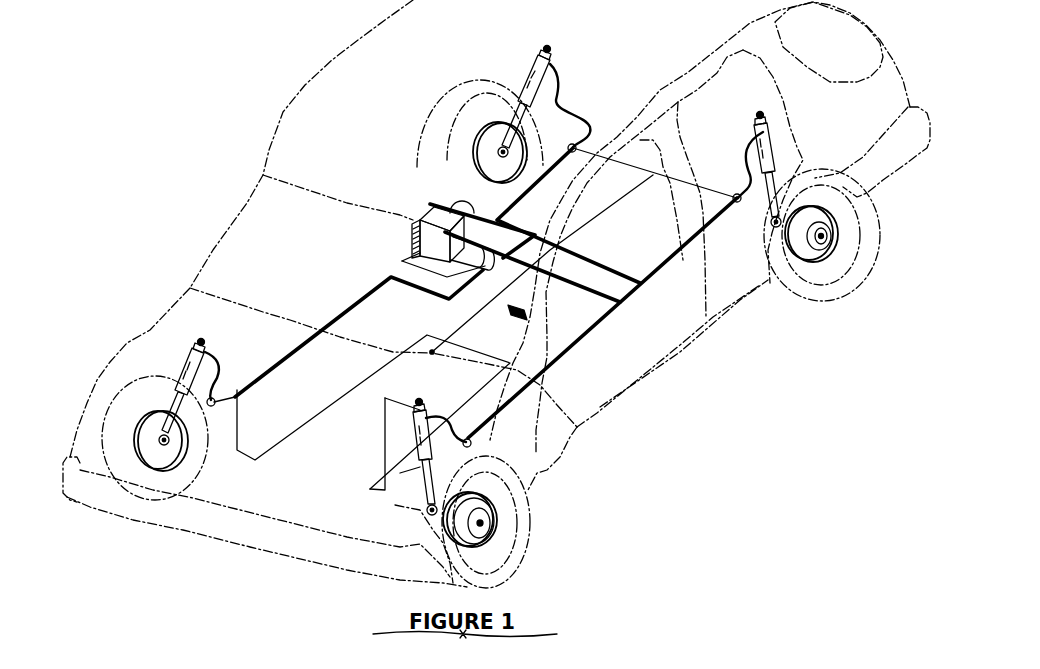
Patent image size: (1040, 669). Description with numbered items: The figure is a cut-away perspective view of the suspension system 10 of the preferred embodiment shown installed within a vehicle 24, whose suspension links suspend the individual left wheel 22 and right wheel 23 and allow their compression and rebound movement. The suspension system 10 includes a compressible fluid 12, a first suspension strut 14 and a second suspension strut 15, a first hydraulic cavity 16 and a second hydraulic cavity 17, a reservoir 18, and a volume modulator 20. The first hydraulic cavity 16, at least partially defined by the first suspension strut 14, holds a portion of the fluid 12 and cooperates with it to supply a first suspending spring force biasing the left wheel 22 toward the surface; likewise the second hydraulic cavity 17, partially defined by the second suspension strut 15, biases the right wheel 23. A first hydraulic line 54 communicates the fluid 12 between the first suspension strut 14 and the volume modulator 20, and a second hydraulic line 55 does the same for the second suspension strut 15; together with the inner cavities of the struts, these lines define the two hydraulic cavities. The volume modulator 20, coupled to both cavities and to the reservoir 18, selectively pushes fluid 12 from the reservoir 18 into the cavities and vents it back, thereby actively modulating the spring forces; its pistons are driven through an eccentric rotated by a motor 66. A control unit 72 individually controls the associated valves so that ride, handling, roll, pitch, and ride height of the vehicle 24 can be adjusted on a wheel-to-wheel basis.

The suspension system 10 is at (203, 172).
The fluid 12 is at (333, 318).
The first suspension strut 14 is at (398, 476).
The second suspension strut 15 is at (185, 407).
The first hydraulic cavity 16 is at (417, 427).
The second hydraulic cavity 17 is at (192, 344).
The reservoir 18 is at (413, 223).
The volume modulator 20 is at (447, 207).
The left wheel 22 is at (518, 540).
The right wheel 23 is at (193, 453).
The vehicle 24 is at (298, 547).
The first hydraulic line 54 is at (471, 442).
The second hydraulic line 55 is at (253, 372).
The motor 66 is at (463, 264).
The control unit 72 is at (417, 220).